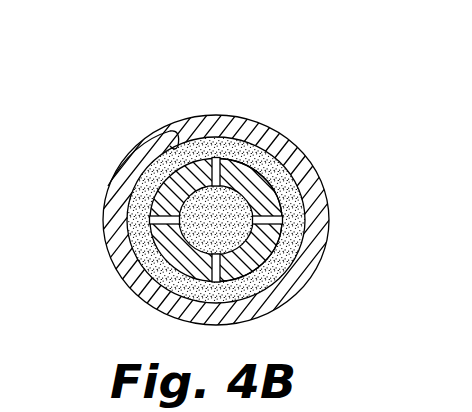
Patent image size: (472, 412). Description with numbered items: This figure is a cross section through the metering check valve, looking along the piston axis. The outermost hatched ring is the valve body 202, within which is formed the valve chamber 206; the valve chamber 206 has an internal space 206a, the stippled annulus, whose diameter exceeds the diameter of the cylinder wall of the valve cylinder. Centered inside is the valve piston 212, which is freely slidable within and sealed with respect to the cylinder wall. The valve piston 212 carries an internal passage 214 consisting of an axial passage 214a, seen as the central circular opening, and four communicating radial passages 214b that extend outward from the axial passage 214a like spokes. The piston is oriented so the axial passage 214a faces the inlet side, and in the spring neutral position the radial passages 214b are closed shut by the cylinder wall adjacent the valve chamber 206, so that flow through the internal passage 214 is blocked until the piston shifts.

The valve body 202 is at (212, 201).
The valve chamber 206 is at (172, 145).
The internal space 206a is at (258, 155).
The valve piston 212 is at (262, 258).
The internal passage 214 is at (245, 190).
The axial passage 214a is at (257, 255).
The radial passage 214b is at (268, 212).